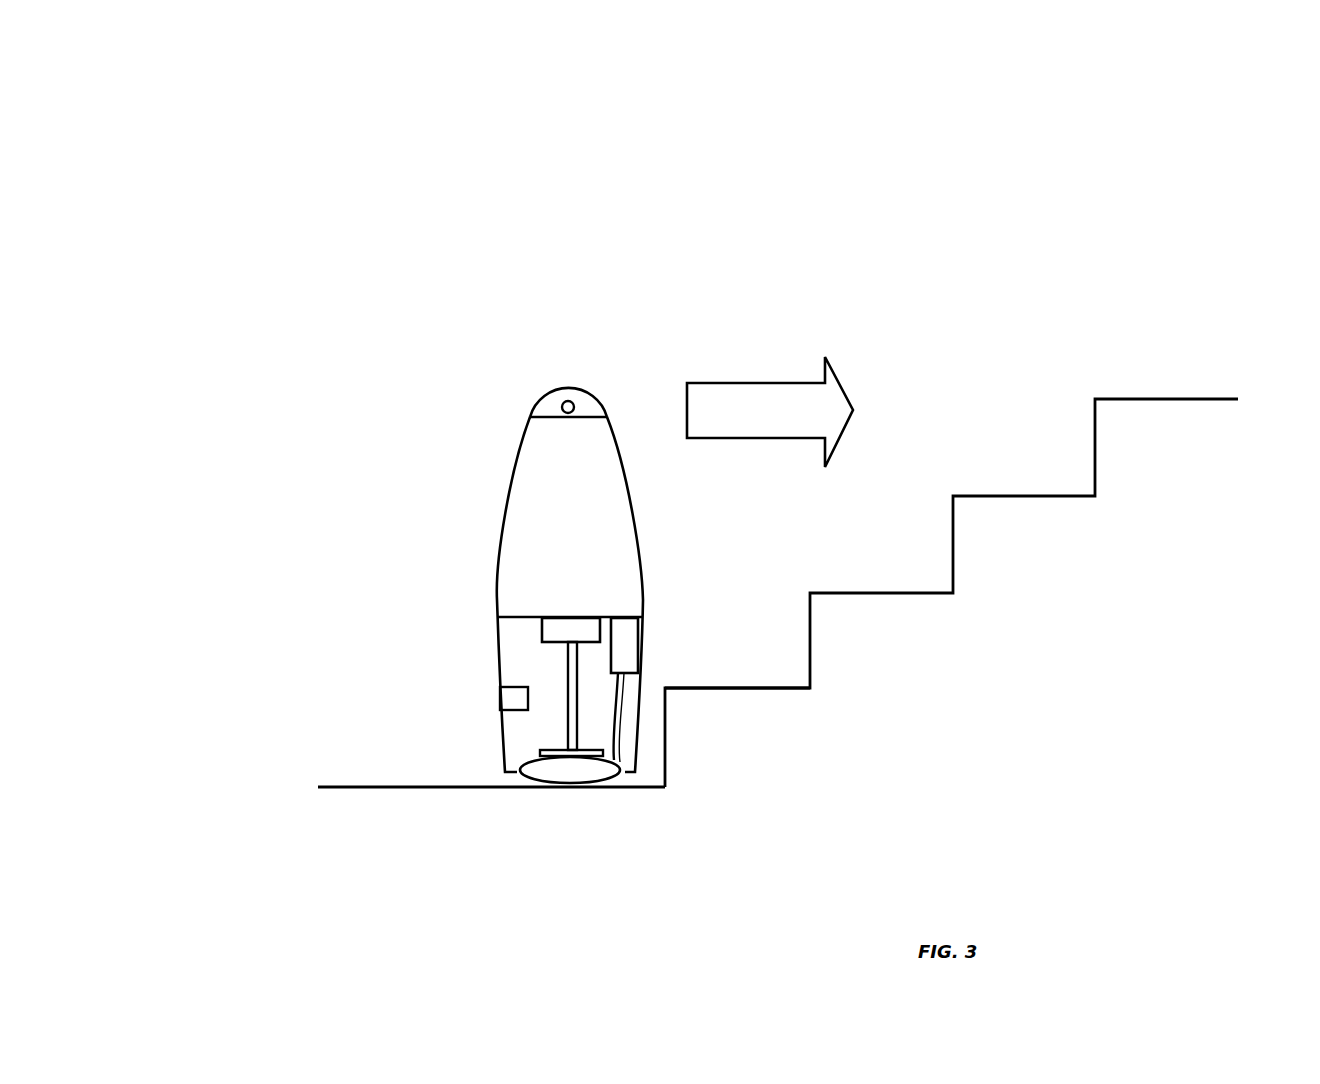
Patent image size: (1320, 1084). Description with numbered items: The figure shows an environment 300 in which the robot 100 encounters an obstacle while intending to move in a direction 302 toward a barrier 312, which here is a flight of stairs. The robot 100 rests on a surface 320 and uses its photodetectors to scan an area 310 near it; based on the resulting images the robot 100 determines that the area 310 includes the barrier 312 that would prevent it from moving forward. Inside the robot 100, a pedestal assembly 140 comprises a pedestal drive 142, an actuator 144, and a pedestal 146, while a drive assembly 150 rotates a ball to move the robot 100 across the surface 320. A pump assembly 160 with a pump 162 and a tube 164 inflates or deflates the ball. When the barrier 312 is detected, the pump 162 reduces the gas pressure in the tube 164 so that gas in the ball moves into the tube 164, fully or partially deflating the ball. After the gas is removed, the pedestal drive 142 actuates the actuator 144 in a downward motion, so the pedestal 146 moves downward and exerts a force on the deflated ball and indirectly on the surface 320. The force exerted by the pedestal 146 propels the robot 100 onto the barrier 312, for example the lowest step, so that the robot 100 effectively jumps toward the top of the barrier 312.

The environment 300 is at (232, 92).
The robot for traversing obstacles 100 is at (478, 398).
The pedestal assembly 140 is at (470, 640).
The pedestal drive 142 is at (540, 618).
The actuator 144 is at (566, 678).
The pedestal 146 is at (538, 750).
The drive assembly 150 is at (498, 698).
The pump assembly 160 is at (672, 656).
The pump 162 is at (642, 615).
The tube 164 is at (628, 784).
The direction 302 is at (842, 378).
The area 310 is at (972, 809).
The barrier 312 is at (748, 688).
The surface 320 is at (355, 787).